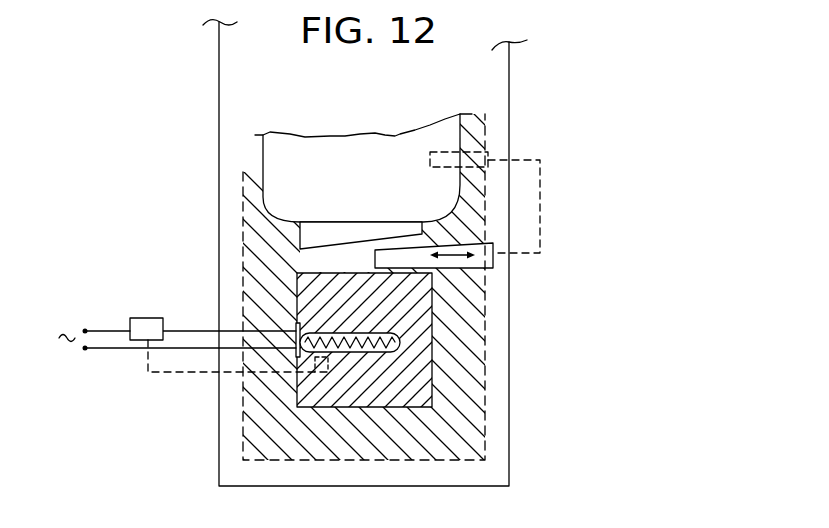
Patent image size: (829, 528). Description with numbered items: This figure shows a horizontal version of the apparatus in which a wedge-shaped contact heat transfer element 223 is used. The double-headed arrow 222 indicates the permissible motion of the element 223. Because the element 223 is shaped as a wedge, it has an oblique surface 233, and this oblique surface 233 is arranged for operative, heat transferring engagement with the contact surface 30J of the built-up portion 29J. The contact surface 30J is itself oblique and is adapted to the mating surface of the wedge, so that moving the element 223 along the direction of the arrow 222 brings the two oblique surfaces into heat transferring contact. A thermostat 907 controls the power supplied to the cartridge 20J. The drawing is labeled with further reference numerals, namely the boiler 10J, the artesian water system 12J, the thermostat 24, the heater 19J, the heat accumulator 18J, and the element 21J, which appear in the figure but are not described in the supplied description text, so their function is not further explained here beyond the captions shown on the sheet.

The boiler 10J is at (512, 68).
The artesian water system 12J is at (262, 162).
The built-up portion 29J is at (318, 228).
The contact surface 30J is at (343, 248).
The thermostat 24 is at (487, 147).
The oblique surface 233 is at (485, 241).
The contact heat transfer element 223 is at (497, 243).
The double-headed arrow 222 is at (460, 269).
The cartridge 20J is at (141, 318).
The heater 19J is at (330, 333).
The thermostat 907 is at (342, 373).
The heat accumulator 18J is at (275, 392).
The heat insulating layer 21J is at (447, 433).